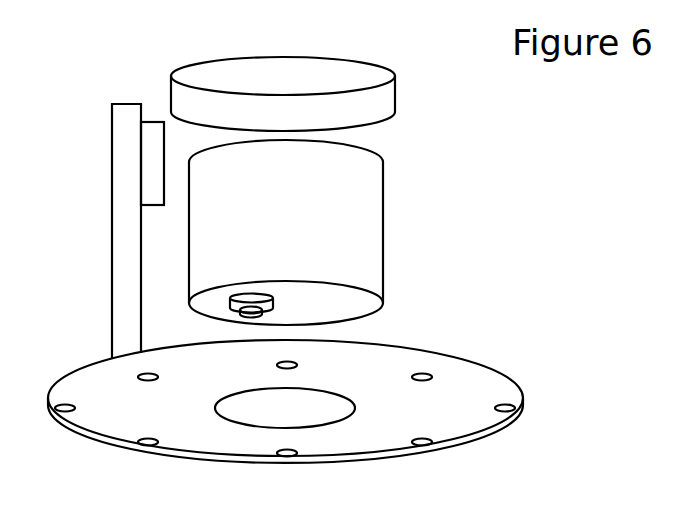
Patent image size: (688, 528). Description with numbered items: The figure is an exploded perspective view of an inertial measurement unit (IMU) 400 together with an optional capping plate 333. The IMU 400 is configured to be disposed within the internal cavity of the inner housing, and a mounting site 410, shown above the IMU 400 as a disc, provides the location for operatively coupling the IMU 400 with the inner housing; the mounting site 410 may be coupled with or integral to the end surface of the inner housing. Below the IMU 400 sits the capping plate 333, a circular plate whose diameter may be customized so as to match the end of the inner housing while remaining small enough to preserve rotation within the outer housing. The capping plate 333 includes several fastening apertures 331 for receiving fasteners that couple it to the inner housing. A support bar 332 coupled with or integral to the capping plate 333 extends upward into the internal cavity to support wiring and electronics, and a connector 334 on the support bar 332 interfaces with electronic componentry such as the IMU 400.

The fastening aperture 331 is at (145, 451).
The support bar 332 is at (104, 138).
The capping plate 333 is at (285, 411).
The connector 334 is at (152, 210).
The inertial measurement unit (IMU) 400 is at (303, 232).
The mounting site 410 is at (305, 114).